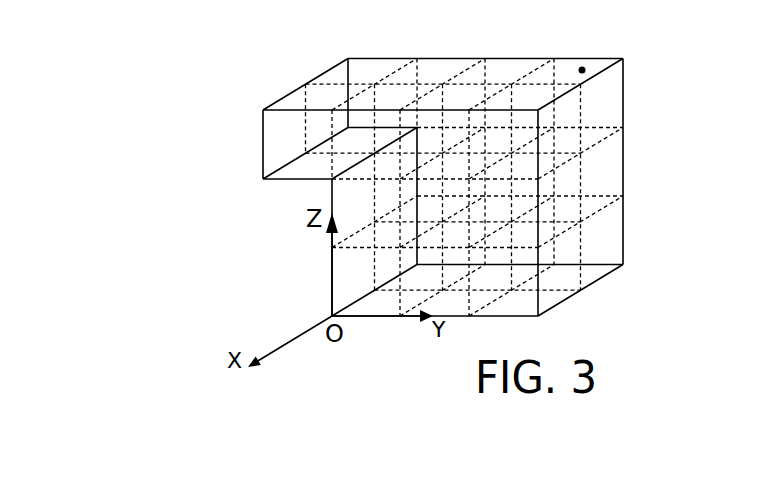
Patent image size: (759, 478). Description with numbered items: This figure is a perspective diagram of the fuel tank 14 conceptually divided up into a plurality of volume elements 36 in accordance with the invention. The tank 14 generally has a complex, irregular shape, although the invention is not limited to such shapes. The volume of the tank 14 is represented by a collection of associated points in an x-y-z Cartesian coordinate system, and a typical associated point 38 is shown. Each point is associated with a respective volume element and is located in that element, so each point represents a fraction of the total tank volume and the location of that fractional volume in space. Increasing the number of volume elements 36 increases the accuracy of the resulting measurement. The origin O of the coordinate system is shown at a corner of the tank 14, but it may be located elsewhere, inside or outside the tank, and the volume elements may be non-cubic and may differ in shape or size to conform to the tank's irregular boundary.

The tank 14 is at (444, 180).
The volume elements 36 is at (603, 99).
The associated point 38 is at (582, 70).